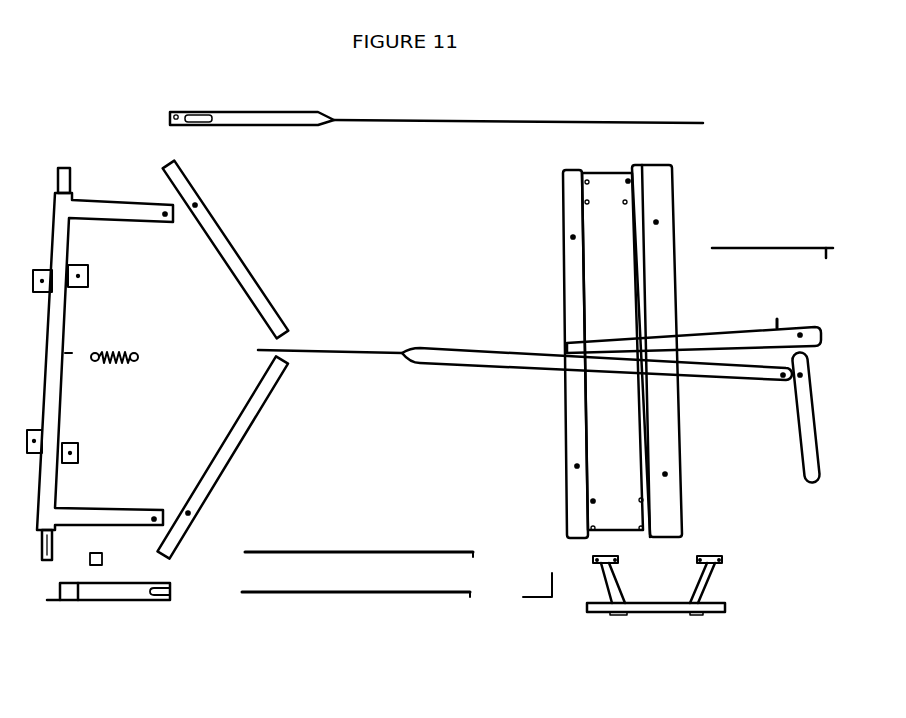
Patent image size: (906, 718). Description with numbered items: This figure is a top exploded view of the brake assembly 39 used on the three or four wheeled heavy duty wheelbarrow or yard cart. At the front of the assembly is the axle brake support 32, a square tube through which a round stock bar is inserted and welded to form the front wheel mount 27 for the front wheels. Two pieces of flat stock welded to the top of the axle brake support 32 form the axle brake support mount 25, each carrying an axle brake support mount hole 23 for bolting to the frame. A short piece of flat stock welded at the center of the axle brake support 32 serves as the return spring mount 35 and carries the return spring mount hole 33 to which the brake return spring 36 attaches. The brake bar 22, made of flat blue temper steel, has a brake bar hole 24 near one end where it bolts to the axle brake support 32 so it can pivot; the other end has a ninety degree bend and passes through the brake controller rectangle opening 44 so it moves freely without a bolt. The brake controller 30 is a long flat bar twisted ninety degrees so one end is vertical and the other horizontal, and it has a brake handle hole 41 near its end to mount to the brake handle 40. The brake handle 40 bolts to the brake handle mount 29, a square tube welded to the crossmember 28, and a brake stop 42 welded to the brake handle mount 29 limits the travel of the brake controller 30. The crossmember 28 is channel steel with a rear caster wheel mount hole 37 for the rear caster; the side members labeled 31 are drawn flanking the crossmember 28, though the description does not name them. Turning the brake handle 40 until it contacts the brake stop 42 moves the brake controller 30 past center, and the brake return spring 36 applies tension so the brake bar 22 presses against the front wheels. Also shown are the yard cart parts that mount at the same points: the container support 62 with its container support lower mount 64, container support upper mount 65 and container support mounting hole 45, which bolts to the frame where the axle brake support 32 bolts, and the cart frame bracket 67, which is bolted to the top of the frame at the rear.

The brake bar 22 is at (225, 252).
The axle brake support mount hole 23 is at (88, 285).
The brake bar hole 24 is at (164, 217).
The axle brake support mount 25 is at (43, 270).
The front wheel mount 27 is at (67, 168).
The crossmember 28 is at (613, 276).
The brake handle mount 29 is at (705, 333).
The brake controller 30 is at (300, 120).
The frame post 31 is at (656, 220).
The axle brake support 32 is at (53, 397).
The return spring mount hole 33 is at (169, 123).
The return spring mount 35 is at (64, 545).
The brake return spring 36 is at (125, 365).
The rear caster wheel mount hole 37 is at (627, 180).
The brake assembly 39 is at (432, 615).
The brake handle 40 is at (793, 247).
The brake handle hole 41 is at (802, 332).
The brake stop 42 is at (776, 319).
The brake controller rectangle opening 44 is at (205, 122).
The container support mounting hole 45 is at (703, 555).
The container support 62 is at (650, 608).
The container support lower mount 64 is at (617, 614).
The container support upper mount 65 is at (593, 558).
The cart frame bracket 67 is at (535, 602).